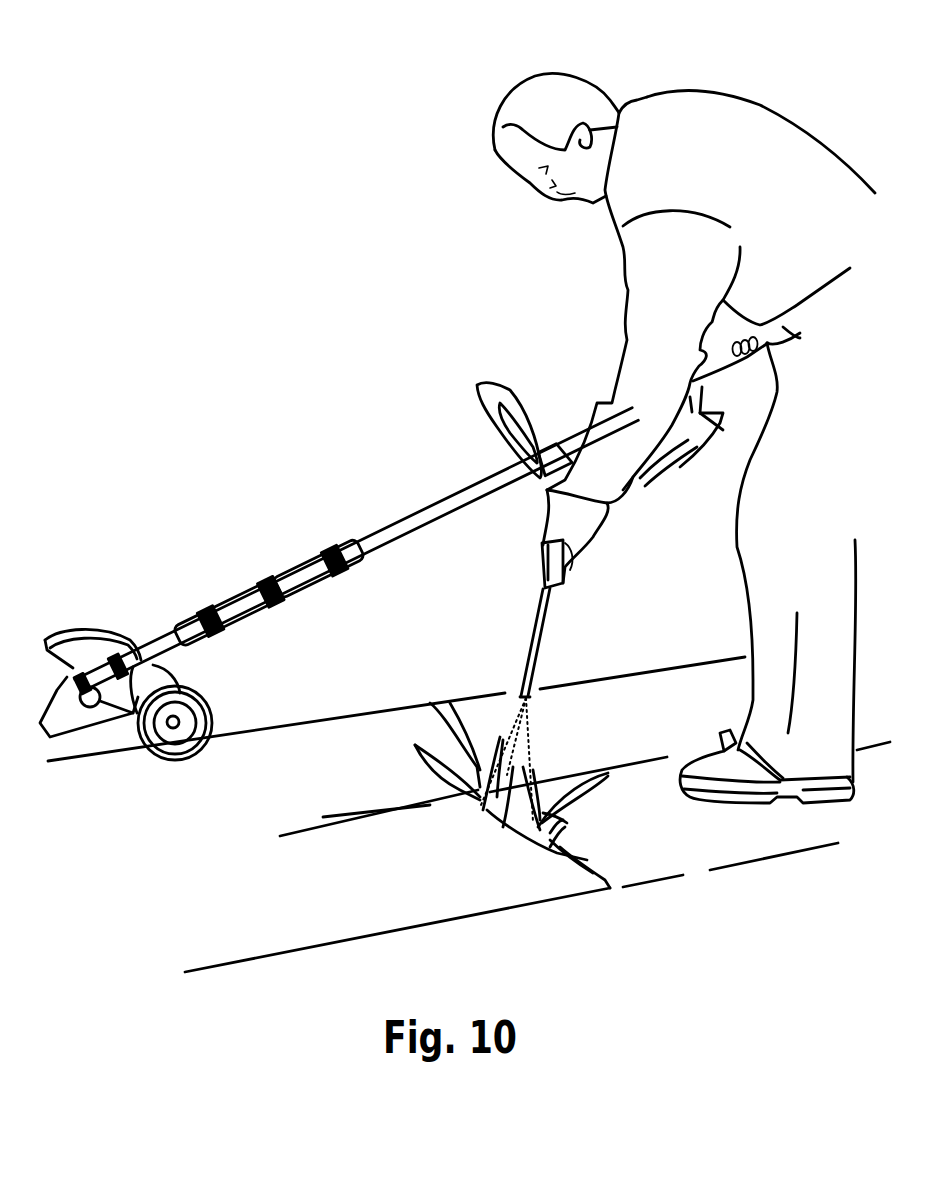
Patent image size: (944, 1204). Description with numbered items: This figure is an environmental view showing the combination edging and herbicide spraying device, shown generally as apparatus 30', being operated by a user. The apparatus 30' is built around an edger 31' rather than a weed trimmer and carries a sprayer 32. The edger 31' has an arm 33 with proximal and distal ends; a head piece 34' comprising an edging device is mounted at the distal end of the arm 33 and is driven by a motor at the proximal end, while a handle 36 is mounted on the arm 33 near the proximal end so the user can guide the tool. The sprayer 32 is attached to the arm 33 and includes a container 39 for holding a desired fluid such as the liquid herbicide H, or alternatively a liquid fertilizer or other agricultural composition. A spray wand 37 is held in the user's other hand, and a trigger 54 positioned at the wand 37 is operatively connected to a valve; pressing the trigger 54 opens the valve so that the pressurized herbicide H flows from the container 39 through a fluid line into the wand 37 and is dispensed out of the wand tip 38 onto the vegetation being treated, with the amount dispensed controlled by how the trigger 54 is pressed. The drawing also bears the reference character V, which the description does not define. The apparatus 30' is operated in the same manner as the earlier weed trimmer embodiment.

The apparatus 30' is at (381, 525).
The edger 31' is at (357, 534).
The sprayer 32 is at (690, 455).
The arm 33 is at (370, 540).
The head piece 34' is at (126, 627).
The handle 36 is at (477, 387).
The spray wand 37 is at (527, 642).
The wand tip 38 is at (560, 673).
The container 39 is at (230, 610).
The trigger 54 is at (543, 580).
The user (vertical orientation) V is at (722, 155).
The liquid herbicide H is at (527, 737).